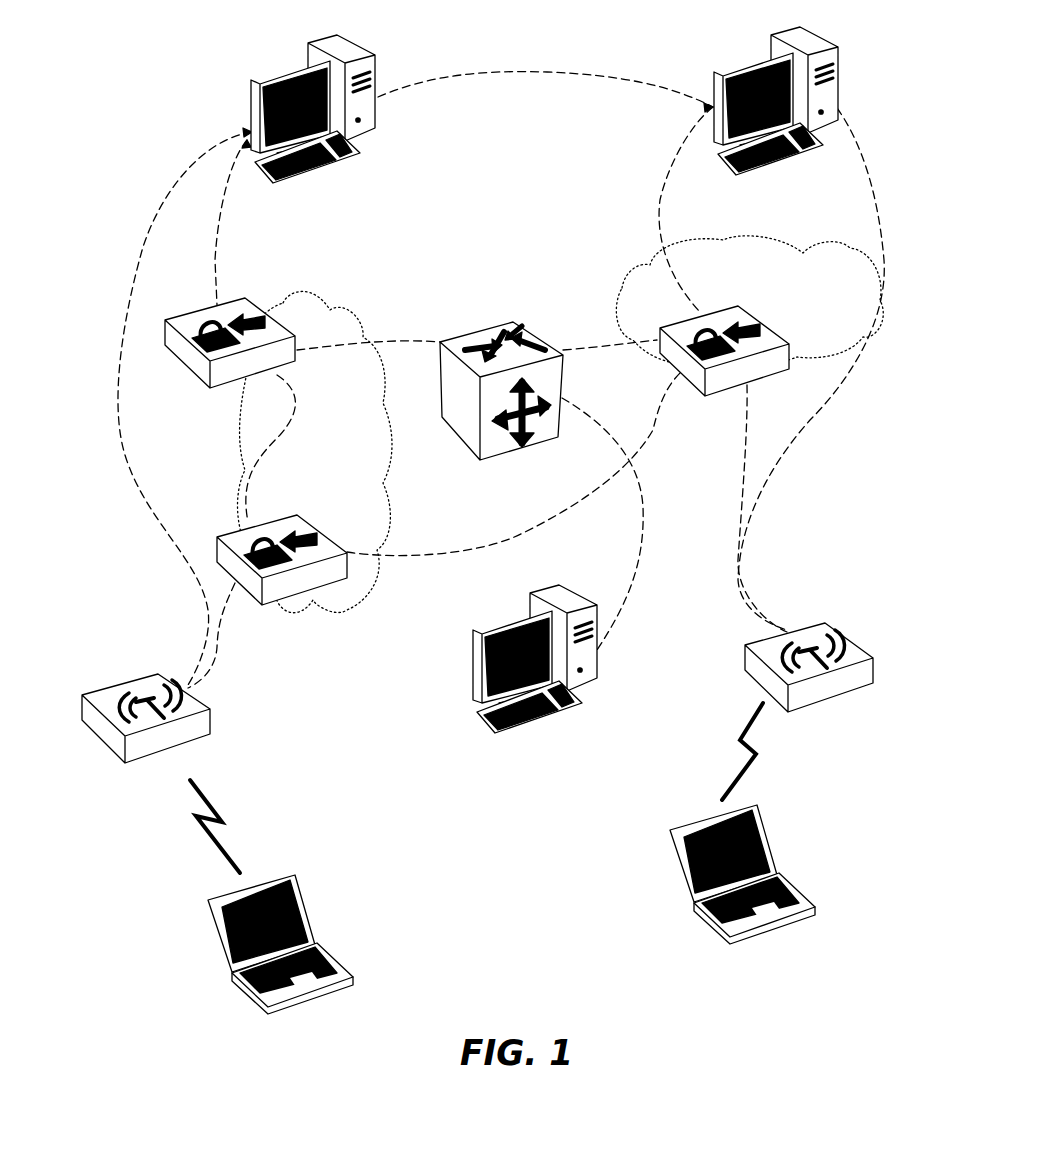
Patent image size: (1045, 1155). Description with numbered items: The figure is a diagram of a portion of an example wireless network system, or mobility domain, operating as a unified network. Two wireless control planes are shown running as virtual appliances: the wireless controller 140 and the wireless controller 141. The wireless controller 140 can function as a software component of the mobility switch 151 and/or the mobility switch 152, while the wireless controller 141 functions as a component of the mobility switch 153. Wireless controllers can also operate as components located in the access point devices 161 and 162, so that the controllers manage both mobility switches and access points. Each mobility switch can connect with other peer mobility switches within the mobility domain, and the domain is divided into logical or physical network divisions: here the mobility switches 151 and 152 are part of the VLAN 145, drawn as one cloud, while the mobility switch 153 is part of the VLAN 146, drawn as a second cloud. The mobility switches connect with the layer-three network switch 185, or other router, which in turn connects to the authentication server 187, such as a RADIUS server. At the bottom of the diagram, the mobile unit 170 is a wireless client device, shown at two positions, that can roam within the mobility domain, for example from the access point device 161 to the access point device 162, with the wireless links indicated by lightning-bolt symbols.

The wireless controller 140 is at (335, 168).
The wireless controller 141 is at (748, 66).
The VLAN 145 is at (335, 303).
The VLAN 146 is at (650, 265).
The mobility switch 151 is at (180, 320).
The mobility switch 152 is at (235, 535).
The mobility switch 153 is at (760, 320).
The access point device 161 is at (160, 675).
The access point device 162 is at (808, 622).
The mobile unit 170 is at (693, 900).
The Layer 3 network switch 185 is at (473, 326).
The authentication server 187 is at (472, 662).